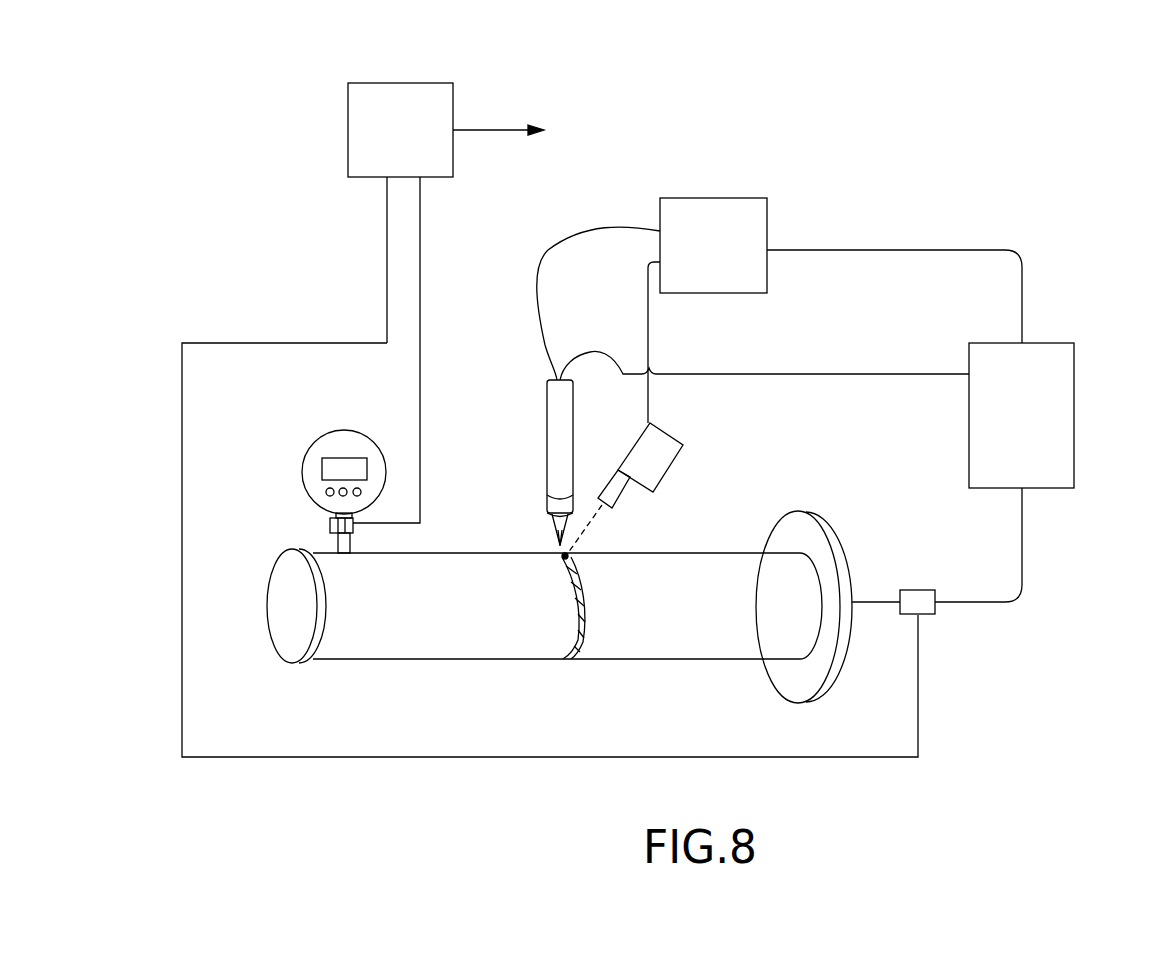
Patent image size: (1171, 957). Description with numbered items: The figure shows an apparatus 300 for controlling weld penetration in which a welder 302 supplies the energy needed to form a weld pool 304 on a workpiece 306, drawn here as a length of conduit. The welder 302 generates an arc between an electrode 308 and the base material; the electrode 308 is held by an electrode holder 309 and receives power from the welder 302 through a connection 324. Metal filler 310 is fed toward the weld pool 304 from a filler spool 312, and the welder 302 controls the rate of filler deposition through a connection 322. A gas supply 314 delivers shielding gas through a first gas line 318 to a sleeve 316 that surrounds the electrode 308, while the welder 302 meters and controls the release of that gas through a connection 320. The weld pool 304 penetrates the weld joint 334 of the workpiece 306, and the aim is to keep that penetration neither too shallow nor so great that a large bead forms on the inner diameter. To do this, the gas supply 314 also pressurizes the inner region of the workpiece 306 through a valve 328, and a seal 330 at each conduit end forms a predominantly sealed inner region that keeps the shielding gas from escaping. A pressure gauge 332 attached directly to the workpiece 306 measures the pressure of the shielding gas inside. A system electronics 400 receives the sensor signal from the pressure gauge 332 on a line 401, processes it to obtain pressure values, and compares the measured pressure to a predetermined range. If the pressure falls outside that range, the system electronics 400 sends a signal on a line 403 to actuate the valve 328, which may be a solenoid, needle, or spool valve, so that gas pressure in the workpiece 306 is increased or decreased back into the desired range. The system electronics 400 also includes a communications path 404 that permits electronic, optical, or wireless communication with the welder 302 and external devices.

The apparatus 300 is at (268, 262).
The welder 302 is at (718, 210).
The weld pool 304 is at (575, 558).
The workpiece 306 is at (455, 636).
The electrode 308 is at (553, 530).
The electrode holder 309 is at (553, 420).
The metal filler 310 is at (590, 523).
The filler spool 312 is at (660, 465).
The gas supply 314 is at (1070, 385).
The sleeve 316 is at (548, 515).
The first gas line 318 is at (785, 374).
The connection 320 is at (876, 247).
The connection 322 is at (648, 330).
The connection 324 is at (533, 262).
The valve 328 is at (918, 590).
The seal 330 is at (290, 645).
The pressure gauge 332 is at (326, 447).
The weld joint 334 is at (583, 627).
The system electronics 400 is at (441, 97).
The line 401 is at (422, 303).
The line 403 is at (384, 260).
The communications path 404 is at (500, 138).